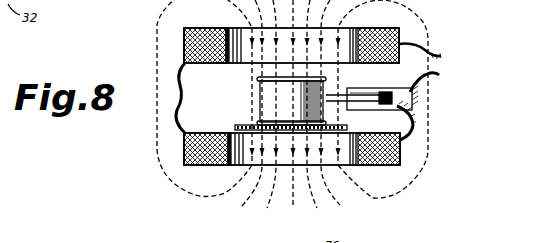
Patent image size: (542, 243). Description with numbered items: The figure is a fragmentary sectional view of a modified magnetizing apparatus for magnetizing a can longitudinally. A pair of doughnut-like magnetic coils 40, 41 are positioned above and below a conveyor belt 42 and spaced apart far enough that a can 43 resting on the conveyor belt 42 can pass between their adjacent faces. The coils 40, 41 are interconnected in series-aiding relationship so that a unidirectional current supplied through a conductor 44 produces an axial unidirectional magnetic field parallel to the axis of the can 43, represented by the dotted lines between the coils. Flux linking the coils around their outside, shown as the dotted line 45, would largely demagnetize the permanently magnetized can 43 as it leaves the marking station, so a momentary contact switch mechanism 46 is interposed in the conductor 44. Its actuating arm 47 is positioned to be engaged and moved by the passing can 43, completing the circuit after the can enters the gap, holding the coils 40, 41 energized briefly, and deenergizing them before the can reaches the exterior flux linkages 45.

The magnetic coil 40 is at (213, 28).
The magnetic coil 41 is at (212, 165).
The conveyor belt 42 is at (176, 98).
The can 43 is at (256, 93).
The conductor 44 is at (340, 66).
The exterior flux linkages 45 is at (157, 70).
The momentary contact switch mechanism 46 is at (413, 131).
The actuating arm 47 is at (348, 110).